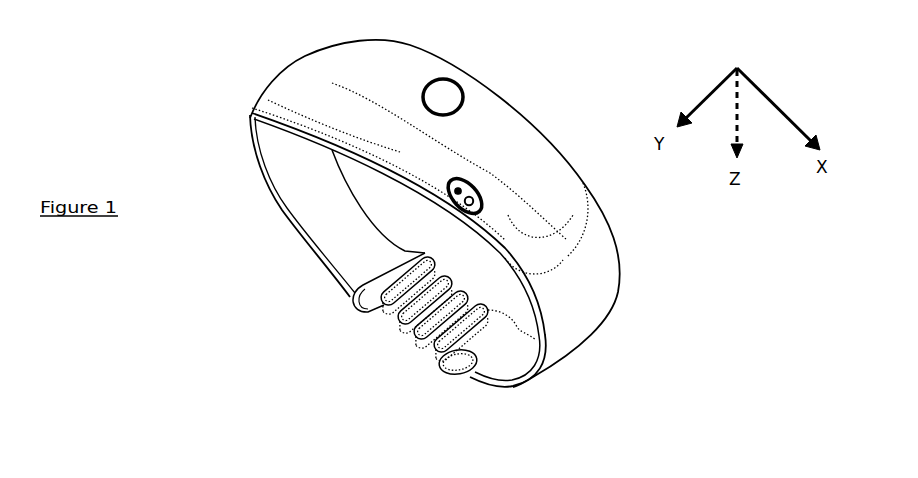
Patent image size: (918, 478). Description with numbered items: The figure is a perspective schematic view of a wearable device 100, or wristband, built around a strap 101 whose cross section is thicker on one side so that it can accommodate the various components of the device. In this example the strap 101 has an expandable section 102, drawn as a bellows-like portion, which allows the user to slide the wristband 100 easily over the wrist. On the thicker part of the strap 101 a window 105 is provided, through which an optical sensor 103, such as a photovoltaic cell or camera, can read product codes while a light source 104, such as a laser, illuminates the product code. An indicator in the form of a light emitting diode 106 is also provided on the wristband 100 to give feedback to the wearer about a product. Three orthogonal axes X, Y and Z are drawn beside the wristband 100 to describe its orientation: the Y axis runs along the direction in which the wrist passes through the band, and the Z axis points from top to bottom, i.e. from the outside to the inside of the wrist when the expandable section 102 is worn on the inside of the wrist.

The wearable device 100 is at (290, 61).
The strap 101 is at (280, 145).
The expandable section 102 is at (387, 313).
The optical sensor 103 is at (484, 206).
The light source 104 is at (473, 186).
The window 105 is at (478, 195).
The light emitting diode 106 is at (440, 92).